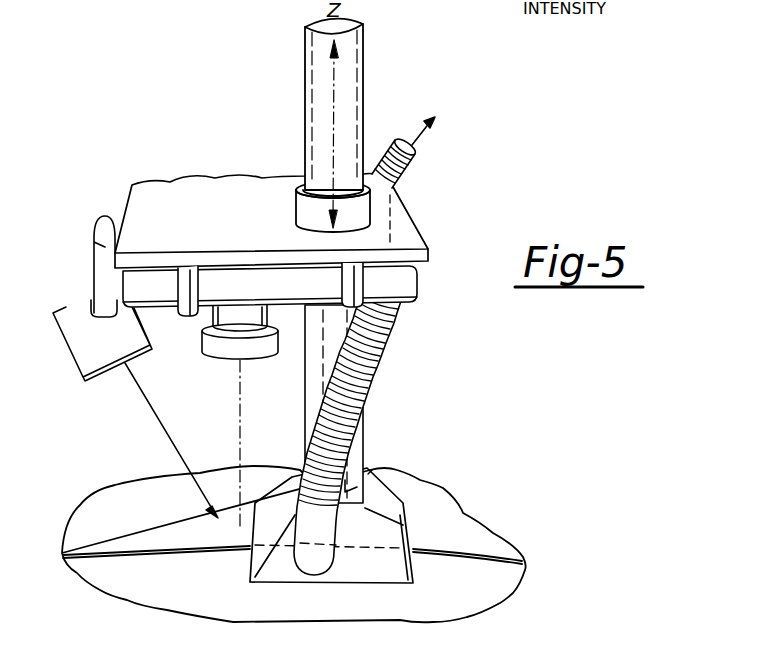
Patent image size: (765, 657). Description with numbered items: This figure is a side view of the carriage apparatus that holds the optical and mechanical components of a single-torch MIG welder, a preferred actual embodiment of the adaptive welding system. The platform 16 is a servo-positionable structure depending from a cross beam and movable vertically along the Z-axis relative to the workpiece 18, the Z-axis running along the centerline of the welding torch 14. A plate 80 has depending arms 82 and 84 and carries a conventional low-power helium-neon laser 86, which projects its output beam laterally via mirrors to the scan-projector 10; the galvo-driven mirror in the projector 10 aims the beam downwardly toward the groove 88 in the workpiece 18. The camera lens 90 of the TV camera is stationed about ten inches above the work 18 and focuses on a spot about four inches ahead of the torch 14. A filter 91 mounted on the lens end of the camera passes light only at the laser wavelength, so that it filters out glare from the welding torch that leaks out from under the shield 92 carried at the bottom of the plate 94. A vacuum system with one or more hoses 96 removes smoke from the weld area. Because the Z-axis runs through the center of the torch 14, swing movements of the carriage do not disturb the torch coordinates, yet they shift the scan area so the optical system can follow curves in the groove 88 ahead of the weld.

The laser projector 10 is at (116, 346).
The welding torch 14 is at (372, 470).
The movable platform 16 is at (399, 110).
The workpiece 18 is at (463, 577).
The plate 80 is at (420, 242).
The depending arm 82 is at (190, 281).
The depending arm 84 is at (360, 281).
The helium-neon laser 86 is at (284, 298).
The groove 88 is at (189, 508).
The camera lens 90 is at (218, 352).
The filter 91 is at (253, 358).
The shield 92 is at (407, 521).
The plate 94 is at (357, 428).
The hose 96 is at (377, 351).